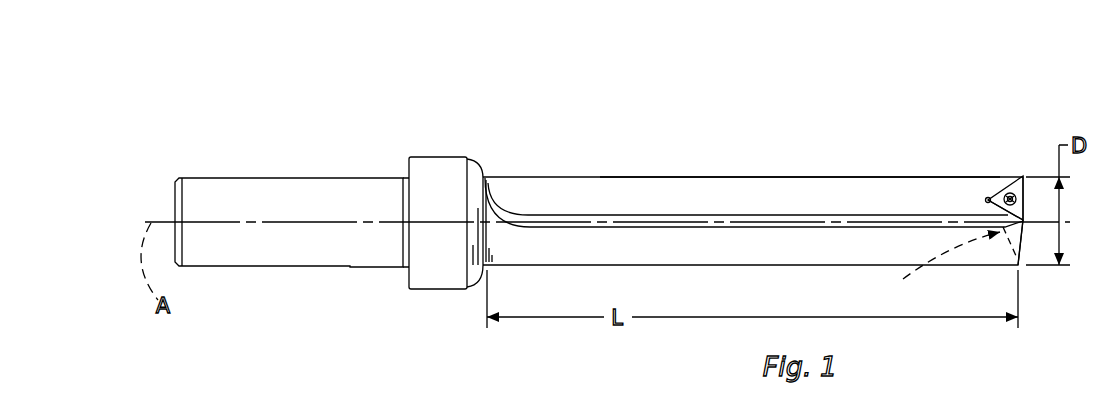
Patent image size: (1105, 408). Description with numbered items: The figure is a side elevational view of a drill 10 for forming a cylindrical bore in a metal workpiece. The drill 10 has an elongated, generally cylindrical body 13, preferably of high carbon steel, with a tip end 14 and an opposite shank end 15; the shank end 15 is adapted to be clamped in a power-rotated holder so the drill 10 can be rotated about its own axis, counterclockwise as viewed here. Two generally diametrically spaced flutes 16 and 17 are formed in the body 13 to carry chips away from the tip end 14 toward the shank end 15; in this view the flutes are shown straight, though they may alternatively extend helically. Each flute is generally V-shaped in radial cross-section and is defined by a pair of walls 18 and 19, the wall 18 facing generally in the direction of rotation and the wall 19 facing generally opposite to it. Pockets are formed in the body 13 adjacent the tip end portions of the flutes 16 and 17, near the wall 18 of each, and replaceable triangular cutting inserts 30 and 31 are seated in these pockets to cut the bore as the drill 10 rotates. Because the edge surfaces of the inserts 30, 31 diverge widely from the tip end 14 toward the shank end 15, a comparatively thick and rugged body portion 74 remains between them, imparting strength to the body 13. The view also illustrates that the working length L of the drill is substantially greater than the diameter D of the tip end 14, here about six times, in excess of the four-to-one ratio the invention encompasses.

The drill 10 is at (665, 116).
The body 13 is at (722, 163).
The tip end 14 is at (1012, 163).
The shank end 15 is at (219, 154).
The flute 16 is at (602, 173).
The flute 17 is at (982, 268).
The wall 18 is at (510, 186).
The wall 19 is at (505, 213).
The cutting insert 30 is at (1028, 206).
The cutting insert 31 is at (951, 265).
The body portion 74 is at (1003, 218).